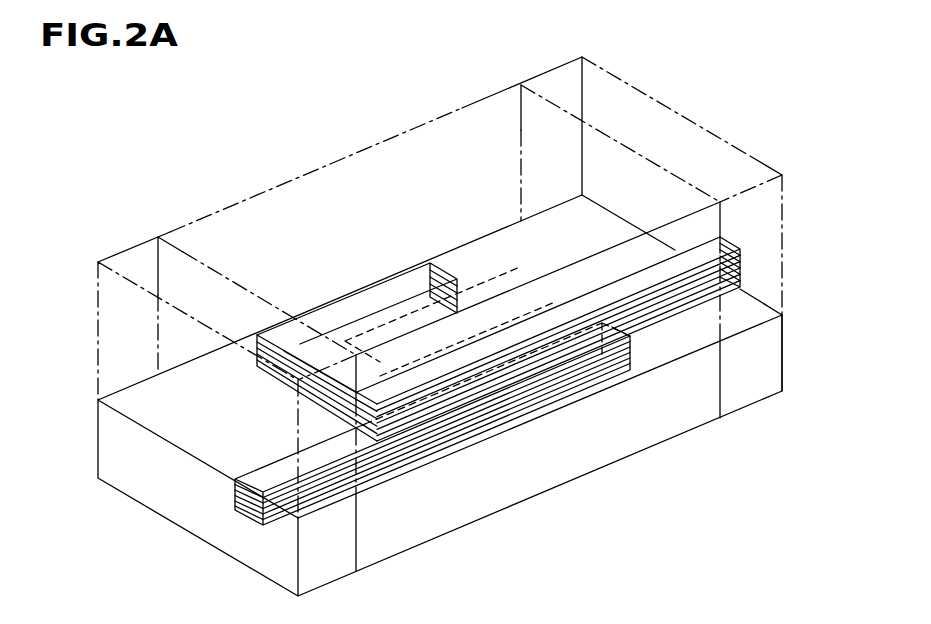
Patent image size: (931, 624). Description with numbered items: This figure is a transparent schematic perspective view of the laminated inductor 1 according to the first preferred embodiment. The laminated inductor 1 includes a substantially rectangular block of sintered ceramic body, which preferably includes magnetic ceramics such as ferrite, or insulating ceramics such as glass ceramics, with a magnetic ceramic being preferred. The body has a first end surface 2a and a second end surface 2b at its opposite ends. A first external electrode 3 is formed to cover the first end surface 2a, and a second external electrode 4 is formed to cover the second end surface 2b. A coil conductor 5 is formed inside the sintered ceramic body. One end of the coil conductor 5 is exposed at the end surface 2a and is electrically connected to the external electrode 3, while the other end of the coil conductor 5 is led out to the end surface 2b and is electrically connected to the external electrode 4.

The laminated inductor 1 is at (146, 214).
The first end surface 2a is at (110, 362).
The second end surface 2b is at (690, 134).
The first external electrode 3 is at (357, 535).
The second external electrode 4 is at (785, 225).
The coil conductor 5 is at (354, 288).